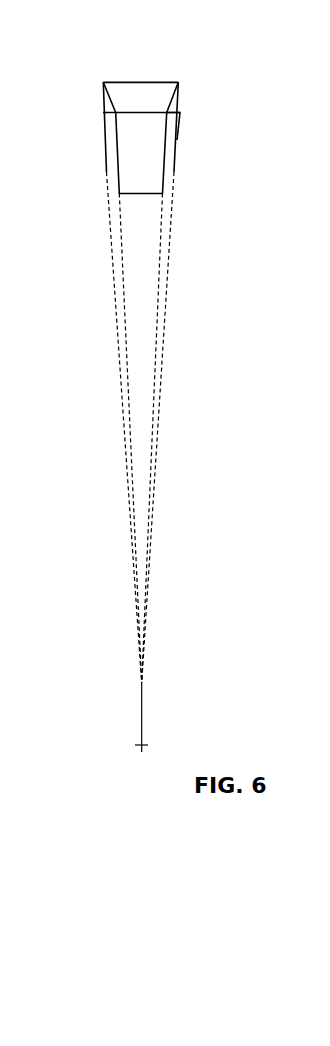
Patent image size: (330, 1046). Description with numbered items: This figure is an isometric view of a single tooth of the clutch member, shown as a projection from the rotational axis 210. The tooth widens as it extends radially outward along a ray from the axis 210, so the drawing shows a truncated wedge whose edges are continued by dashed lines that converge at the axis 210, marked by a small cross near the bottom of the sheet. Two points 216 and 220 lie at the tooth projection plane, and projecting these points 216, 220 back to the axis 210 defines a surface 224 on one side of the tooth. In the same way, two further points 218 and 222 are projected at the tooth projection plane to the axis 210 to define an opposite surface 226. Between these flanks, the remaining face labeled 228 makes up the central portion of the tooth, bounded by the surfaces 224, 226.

The rotational axis 210 is at (143, 742).
The point 216 is at (103, 113).
The point 218 is at (180, 113).
The point 220 is at (104, 82).
The point 222 is at (179, 83).
The surface 224 is at (112, 142).
The surface 226 is at (172, 138).
The front surface 228 is at (134, 130).